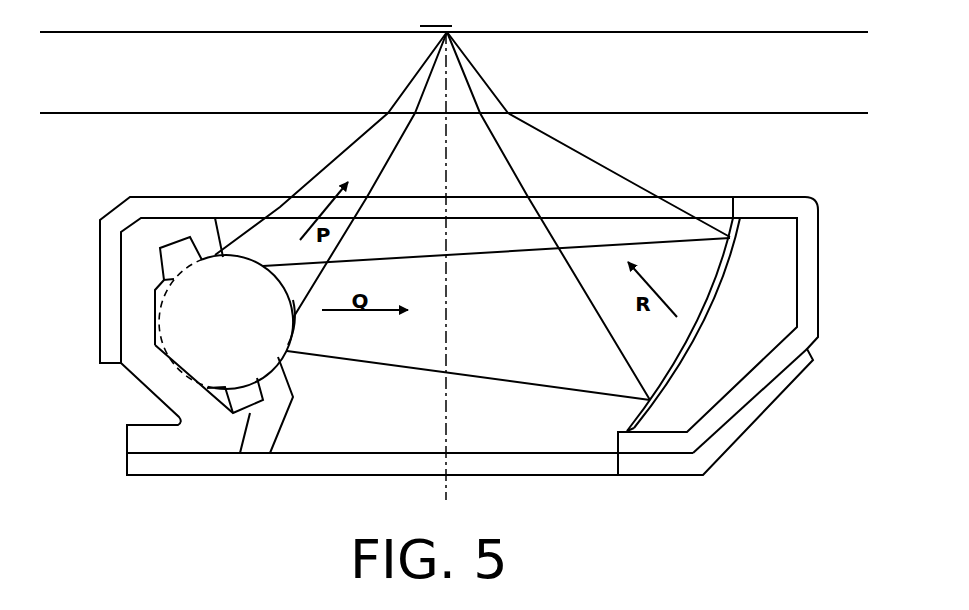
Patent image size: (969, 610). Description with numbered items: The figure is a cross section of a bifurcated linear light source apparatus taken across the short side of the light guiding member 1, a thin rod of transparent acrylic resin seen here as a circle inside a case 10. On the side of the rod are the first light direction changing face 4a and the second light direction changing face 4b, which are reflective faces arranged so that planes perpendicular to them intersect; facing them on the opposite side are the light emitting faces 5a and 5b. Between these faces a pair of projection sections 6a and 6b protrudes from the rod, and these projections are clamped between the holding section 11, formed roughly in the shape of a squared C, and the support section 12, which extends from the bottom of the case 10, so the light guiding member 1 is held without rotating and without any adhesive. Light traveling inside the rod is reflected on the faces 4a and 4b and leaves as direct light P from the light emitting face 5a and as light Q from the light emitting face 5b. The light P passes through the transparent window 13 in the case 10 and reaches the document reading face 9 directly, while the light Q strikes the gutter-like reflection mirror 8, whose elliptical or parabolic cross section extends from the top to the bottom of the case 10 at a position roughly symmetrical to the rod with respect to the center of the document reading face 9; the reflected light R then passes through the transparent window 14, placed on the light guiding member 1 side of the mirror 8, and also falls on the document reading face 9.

The light guiding member 1 is at (215, 255).
The first light direction changing face 4a is at (180, 367).
The second light direction changing face 4b is at (157, 320).
The light emitting face 5a is at (245, 257).
The light emitting face 5b is at (297, 317).
The projection section 6a is at (173, 240).
The projection section 6b is at (240, 453).
The reflection mirror 8 is at (730, 268).
The document reading face 9 is at (456, 26).
The case 10 is at (820, 222).
The holding section 11 is at (128, 255).
The support section 12 is at (167, 447).
The transparent window 13 is at (322, 196).
The transparent window 14 is at (578, 197).